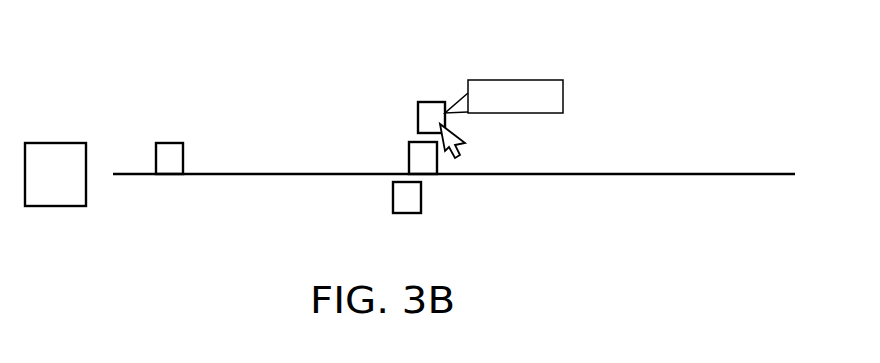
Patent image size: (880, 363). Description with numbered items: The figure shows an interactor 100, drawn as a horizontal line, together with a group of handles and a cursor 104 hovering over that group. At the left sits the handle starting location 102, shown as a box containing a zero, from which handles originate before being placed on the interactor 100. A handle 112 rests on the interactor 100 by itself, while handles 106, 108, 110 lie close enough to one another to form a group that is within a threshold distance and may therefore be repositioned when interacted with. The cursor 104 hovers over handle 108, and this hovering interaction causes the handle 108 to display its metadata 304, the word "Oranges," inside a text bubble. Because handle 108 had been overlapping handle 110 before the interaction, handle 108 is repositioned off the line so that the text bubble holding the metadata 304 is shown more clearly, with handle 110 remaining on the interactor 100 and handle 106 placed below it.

The interactor 100 is at (737, 173).
The handle starting location 102 is at (55, 143).
The cursor 104 is at (467, 146).
The handle 106 is at (393, 199).
The handle 108 is at (430, 102).
The handle 110 is at (409, 160).
The handle 112 is at (170, 143).
The metadata 304 is at (515, 80).